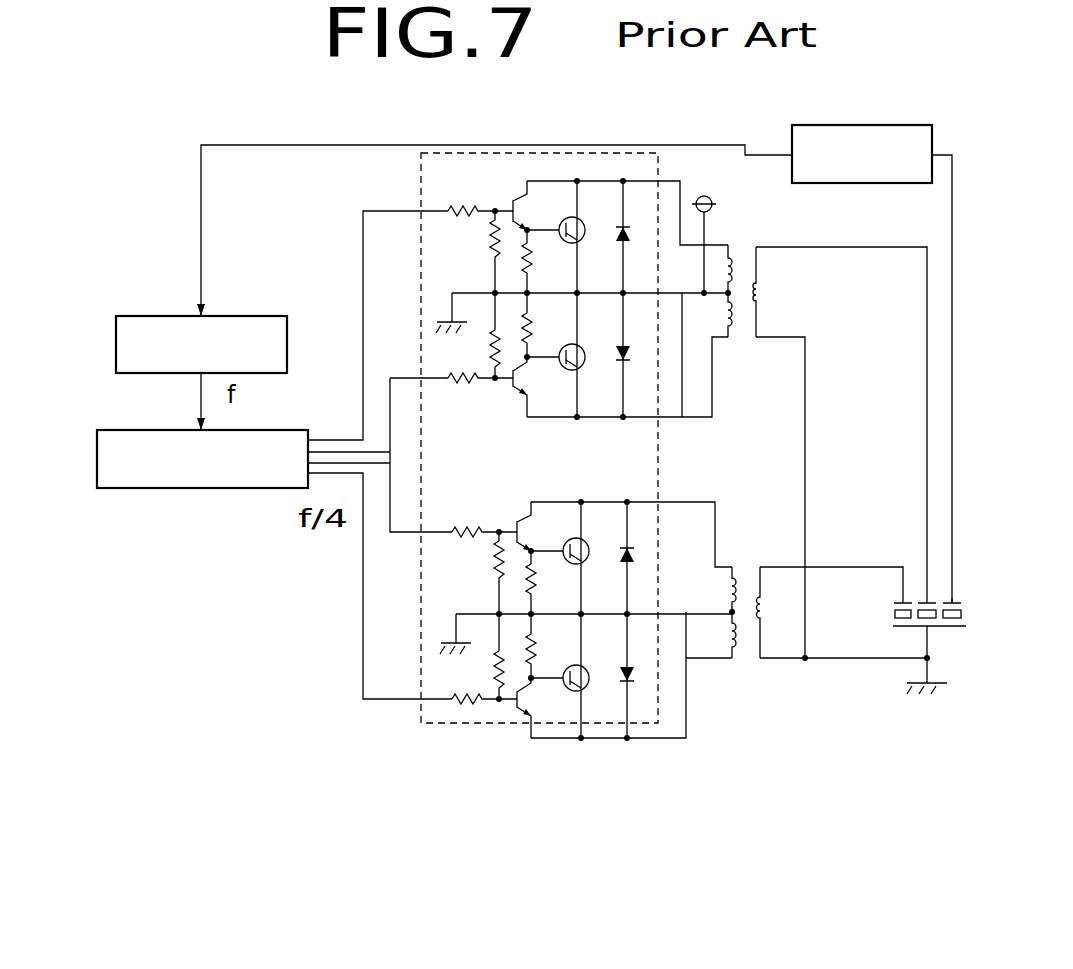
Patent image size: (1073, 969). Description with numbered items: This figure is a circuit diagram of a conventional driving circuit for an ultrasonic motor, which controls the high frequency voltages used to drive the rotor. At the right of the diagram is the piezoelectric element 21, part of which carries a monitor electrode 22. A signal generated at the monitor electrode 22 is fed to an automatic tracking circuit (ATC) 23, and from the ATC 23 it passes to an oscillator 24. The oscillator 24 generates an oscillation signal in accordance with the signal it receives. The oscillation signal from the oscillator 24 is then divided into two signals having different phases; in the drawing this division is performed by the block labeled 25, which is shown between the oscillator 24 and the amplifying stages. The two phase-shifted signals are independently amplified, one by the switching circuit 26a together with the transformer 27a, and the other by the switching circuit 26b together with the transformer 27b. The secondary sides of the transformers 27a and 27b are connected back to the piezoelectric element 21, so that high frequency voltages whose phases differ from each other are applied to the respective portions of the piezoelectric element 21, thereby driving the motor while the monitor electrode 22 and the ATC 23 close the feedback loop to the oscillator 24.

The piezoelectric element 21 is at (980, 613).
The monitor electrode 22 is at (953, 603).
The automatic tracking circuit (ATC) 23 is at (887, 125).
The oscillator 24 is at (148, 316).
The phase shifter 25 is at (120, 430).
The switching circuit 26a is at (493, 152).
The switching circuit 26b is at (437, 723).
The transformer 27a is at (758, 290).
The transformer 27b is at (762, 625).